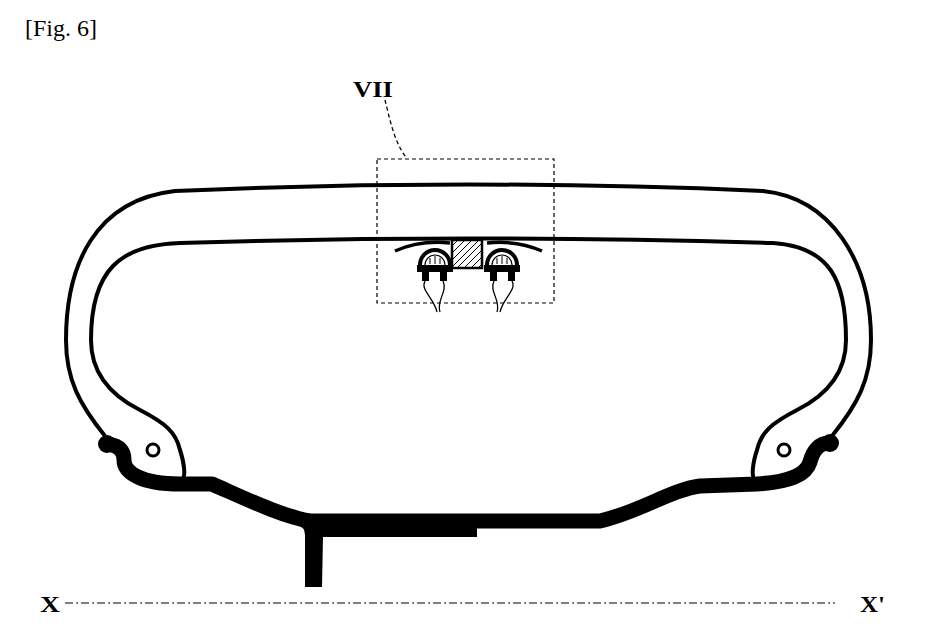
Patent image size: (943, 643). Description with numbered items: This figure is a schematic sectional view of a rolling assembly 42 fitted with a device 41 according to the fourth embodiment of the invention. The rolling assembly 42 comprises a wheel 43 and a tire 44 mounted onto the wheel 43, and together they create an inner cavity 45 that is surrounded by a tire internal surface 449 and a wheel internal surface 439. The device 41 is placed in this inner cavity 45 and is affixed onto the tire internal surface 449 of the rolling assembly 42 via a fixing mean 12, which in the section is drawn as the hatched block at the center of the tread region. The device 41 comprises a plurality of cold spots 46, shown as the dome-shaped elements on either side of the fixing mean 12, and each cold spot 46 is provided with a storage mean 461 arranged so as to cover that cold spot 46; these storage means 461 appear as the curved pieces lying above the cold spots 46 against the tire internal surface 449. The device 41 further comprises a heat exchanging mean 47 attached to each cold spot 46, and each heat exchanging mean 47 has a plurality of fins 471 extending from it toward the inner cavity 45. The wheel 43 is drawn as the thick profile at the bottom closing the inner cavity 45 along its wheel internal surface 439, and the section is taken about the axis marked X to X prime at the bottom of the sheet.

The fixing mean 12 is at (463, 270).
The device 41 is at (401, 321).
The rolling assembly 42 is at (755, 150).
The wheel 43 is at (728, 493).
The tire 44 is at (215, 215).
The inner cavity 45 is at (433, 455).
The cold spot 46 is at (422, 257).
The heat exchanging mean 47 is at (417, 268).
The wheel internal surface 439 is at (601, 505).
The tire internal surface 449 is at (727, 242).
The storage mean 461 is at (395, 250).
The fin 471 is at (472, 310).